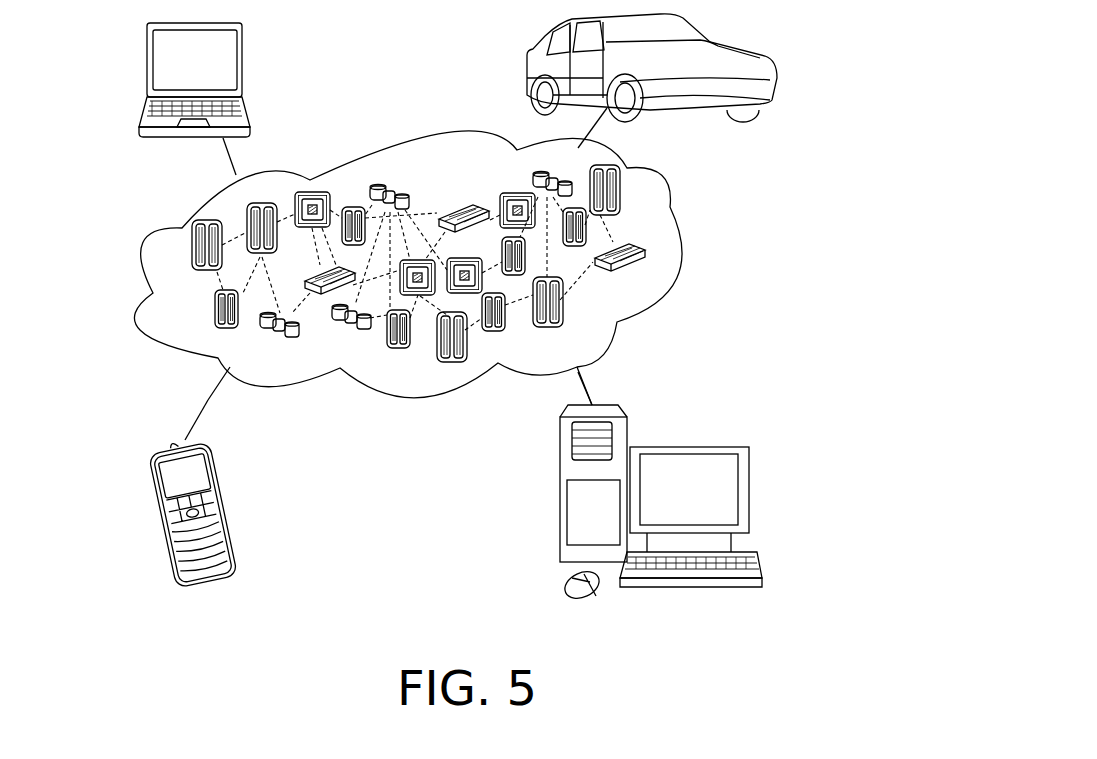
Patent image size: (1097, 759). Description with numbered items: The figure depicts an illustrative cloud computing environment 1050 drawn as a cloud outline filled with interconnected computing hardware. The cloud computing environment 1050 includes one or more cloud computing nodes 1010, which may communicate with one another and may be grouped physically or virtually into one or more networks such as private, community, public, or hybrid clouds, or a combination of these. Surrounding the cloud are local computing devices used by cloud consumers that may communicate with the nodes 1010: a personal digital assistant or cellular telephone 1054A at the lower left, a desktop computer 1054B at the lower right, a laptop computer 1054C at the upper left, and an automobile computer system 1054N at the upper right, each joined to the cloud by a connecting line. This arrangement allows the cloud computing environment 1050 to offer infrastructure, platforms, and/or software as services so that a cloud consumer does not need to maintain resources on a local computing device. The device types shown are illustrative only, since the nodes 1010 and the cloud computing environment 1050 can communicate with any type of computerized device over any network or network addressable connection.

The laptop computer 1054C is at (243, 38).
The automobile computer system 1054N is at (523, 73).
The cloud computing environment 1050 is at (670, 210).
The cloud computing node 1010 is at (652, 260).
The personal digital assistant or cellular telephone 1054A is at (232, 512).
The desktop computer 1054B is at (727, 447).